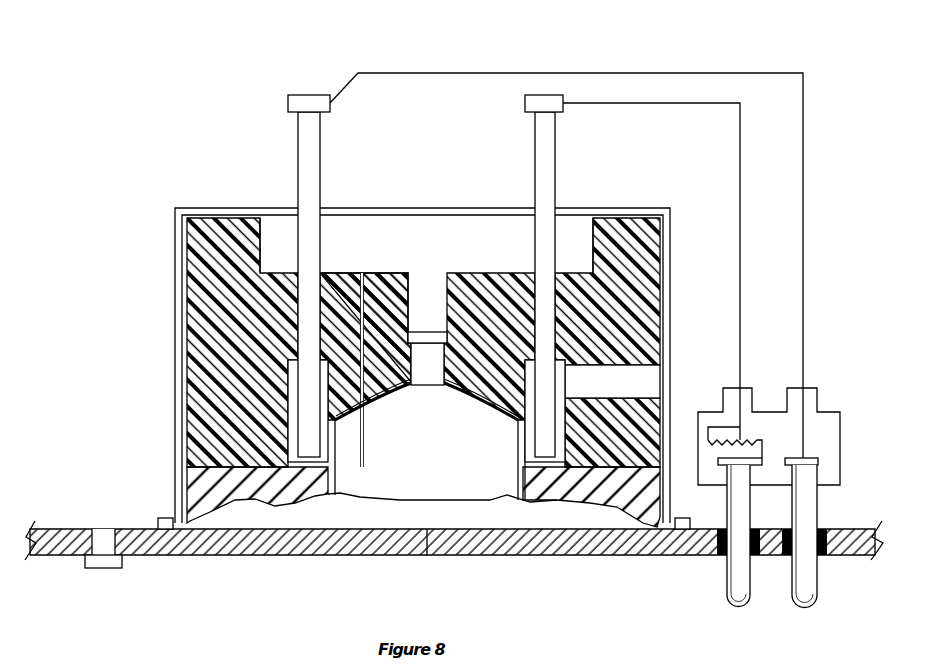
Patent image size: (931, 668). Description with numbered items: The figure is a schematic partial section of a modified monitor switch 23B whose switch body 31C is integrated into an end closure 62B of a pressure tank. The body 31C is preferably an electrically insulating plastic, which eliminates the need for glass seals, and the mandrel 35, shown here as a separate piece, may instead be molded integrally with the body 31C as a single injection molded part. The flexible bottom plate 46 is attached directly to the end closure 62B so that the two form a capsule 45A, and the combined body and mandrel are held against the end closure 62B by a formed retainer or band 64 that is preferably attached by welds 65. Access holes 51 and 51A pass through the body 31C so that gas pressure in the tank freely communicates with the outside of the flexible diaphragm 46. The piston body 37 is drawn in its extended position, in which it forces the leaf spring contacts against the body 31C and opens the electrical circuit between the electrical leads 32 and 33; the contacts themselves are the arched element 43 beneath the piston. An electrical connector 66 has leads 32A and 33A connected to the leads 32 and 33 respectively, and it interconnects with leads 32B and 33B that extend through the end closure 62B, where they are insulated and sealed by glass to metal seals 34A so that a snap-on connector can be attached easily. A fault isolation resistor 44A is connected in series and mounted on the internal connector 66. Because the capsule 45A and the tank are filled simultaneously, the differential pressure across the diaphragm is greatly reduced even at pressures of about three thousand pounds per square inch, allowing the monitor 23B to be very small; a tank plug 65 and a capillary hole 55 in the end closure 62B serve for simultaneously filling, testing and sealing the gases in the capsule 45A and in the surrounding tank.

The monitor switch 23B is at (229, 197).
The switch body 31C is at (646, 238).
The electrical lead 32 is at (552, 150).
The electrical lead 33 is at (320, 150).
The lead 32A is at (740, 122).
The lead 33A is at (688, 72).
The lead 32B is at (730, 590).
The lead 33B is at (800, 600).
The glass to metal seal 34A is at (718, 553).
The mandrel 35 is at (527, 483).
The piston body 37 is at (460, 440).
The bimetal disc 43 is at (352, 400).
The fault isolation resistor 44A is at (752, 440).
The capsule 45A is at (312, 530).
The flexible bottom plate 46 is at (358, 497).
The access hole 51 is at (615, 370).
The access hole 51A is at (362, 273).
The capillary hole 55 is at (428, 554).
The end closure 62B is at (58, 530).
The retainer or band 64 is at (670, 284).
The welds 65 is at (167, 518).
The electrical connector 66 is at (827, 412).